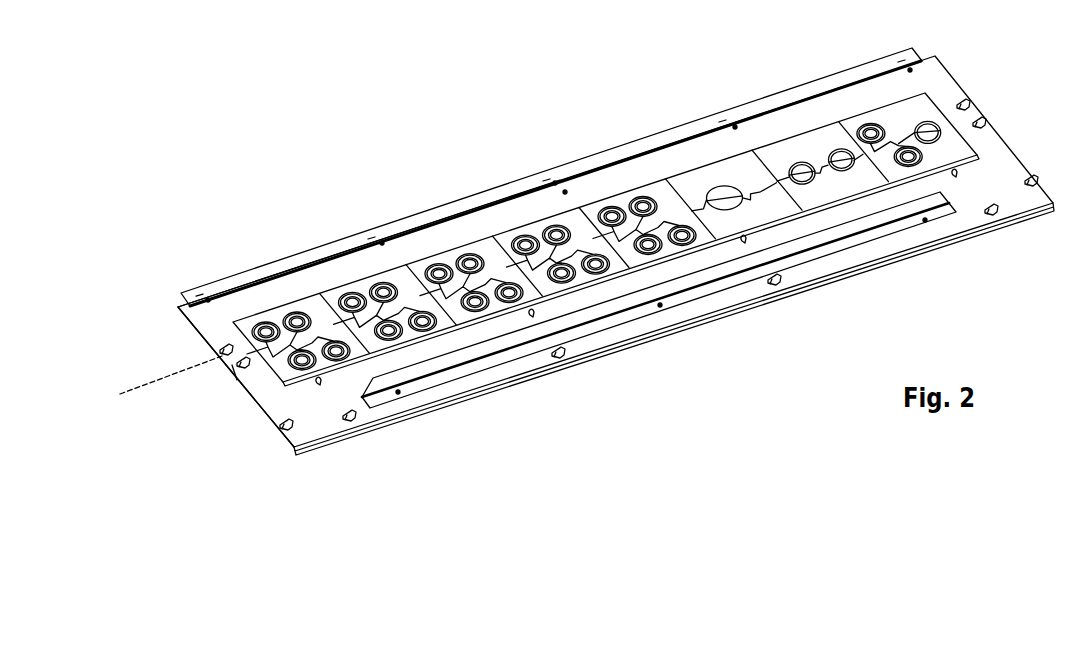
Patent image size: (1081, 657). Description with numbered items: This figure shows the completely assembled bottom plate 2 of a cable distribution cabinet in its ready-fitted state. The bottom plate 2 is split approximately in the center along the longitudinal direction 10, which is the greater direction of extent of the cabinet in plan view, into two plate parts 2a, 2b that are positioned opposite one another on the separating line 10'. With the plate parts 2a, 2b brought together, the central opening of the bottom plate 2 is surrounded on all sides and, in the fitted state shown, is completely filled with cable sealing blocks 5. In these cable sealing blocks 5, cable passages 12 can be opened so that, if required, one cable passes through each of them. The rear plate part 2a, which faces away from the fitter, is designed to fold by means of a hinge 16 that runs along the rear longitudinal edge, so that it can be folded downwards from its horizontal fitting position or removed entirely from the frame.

The bottom plate 2 is at (659, 420).
The rear plate part 2a is at (369, 252).
The plate part 2b is at (236, 377).
The cable sealing blocks 5 is at (713, 138).
The longitudinal direction 10 is at (320, 508).
The separating line 10' is at (171, 397).
The cable passages 12 is at (420, 311).
The hinge 16 is at (273, 270).